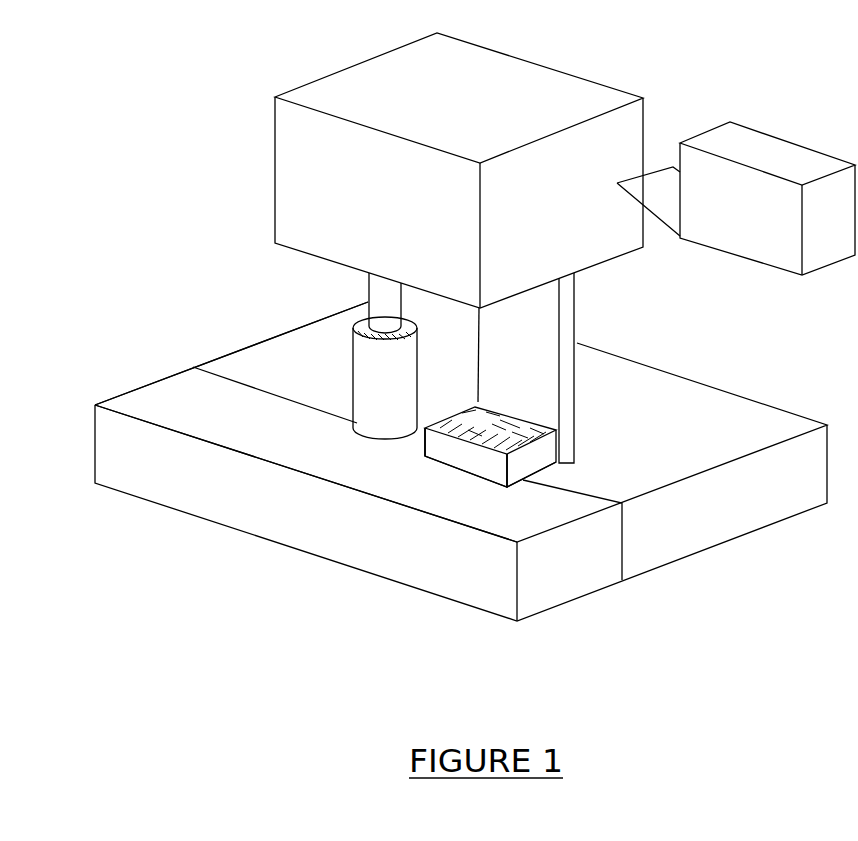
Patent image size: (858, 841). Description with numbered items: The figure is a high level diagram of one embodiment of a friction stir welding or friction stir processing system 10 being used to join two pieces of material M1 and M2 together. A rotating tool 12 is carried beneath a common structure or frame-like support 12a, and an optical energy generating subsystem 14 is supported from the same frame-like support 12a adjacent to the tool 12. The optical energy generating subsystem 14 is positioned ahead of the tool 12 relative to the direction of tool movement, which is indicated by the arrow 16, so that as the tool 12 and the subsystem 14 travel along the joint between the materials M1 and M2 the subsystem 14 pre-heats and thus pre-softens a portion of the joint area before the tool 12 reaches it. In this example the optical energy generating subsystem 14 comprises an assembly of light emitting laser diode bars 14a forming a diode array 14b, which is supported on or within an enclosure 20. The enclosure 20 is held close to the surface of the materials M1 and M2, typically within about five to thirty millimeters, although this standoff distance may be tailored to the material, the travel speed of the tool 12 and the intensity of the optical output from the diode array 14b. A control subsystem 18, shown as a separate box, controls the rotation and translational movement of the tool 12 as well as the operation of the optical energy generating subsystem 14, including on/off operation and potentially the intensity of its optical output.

The friction stir welding or friction stir processing system 10 is at (473, 248).
The tool 12 is at (357, 424).
The frame-like support 12a is at (273, 168).
The optical energy generating subsystem 14 is at (516, 414).
The laser diode bars 14a is at (472, 458).
The diode array 14b is at (436, 451).
The arrow 16 is at (590, 486).
The control subsystem 18 is at (735, 246).
The enclosure 20 is at (519, 460).
The material M1 is at (314, 356).
The material M2 is at (247, 416).